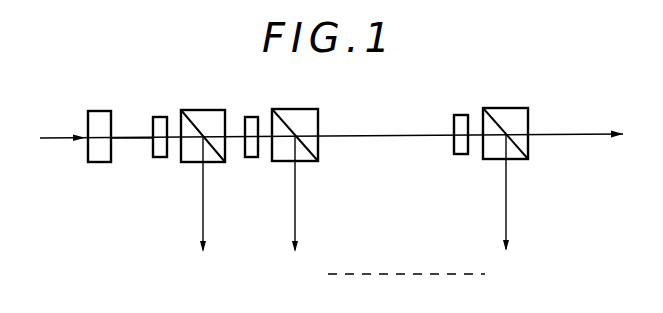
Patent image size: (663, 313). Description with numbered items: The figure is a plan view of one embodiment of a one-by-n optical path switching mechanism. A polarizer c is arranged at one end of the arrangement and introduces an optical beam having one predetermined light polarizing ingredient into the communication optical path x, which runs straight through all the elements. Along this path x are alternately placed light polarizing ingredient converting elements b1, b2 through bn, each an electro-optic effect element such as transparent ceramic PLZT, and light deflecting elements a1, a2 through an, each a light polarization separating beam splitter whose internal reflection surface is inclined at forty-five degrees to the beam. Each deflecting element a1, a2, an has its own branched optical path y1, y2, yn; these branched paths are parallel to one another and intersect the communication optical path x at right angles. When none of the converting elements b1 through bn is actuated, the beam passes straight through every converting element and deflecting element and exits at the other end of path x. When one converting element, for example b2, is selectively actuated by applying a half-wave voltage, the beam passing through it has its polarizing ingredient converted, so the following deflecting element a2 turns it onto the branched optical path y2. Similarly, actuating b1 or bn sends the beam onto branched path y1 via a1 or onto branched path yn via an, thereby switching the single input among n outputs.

The polarizer c is at (97, 110).
The communication optical path x is at (128, 134).
The light polarizing ingredient converting element b1 is at (160, 123).
The light deflecting element a1 is at (203, 120).
The light polarizing ingredient converting element b2 is at (252, 123).
The light deflecting element a2 is at (295, 119).
The light polarizing ingredient converting element bn is at (460, 120).
The light deflecting element an is at (505, 117).
The branched optical path y1 is at (206, 211).
The branched optical path y2 is at (301, 211).
The branched optical path yn is at (510, 209).